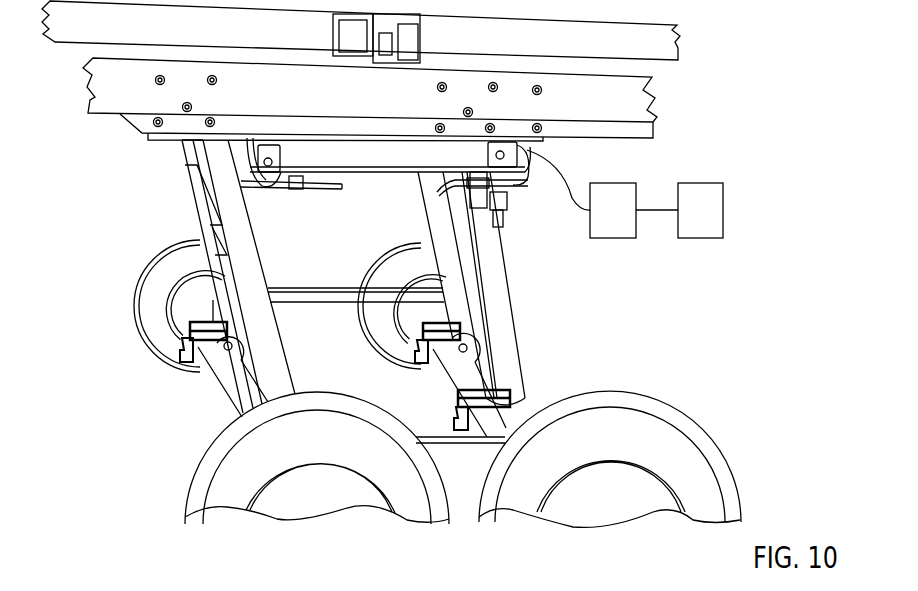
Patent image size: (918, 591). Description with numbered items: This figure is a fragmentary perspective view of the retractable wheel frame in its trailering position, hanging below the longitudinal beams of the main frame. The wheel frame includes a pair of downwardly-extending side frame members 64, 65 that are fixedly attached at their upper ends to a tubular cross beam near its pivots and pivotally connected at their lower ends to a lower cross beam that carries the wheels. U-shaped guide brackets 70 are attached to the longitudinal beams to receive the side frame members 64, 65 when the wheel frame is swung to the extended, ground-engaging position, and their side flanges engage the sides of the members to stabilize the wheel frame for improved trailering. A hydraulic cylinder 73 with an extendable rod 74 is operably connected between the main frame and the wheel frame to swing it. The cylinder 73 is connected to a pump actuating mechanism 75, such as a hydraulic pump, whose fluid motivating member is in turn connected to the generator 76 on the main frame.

The side frame member 64 is at (513, 367).
The side frame member 65 is at (205, 247).
The U-shaped guide bracket 70 is at (480, 207).
The hydraulic cylinder 73 is at (343, 153).
The extendable rod 74 is at (266, 150).
The pump actuating mechanism 75 is at (618, 183).
The generator 76 is at (712, 183).